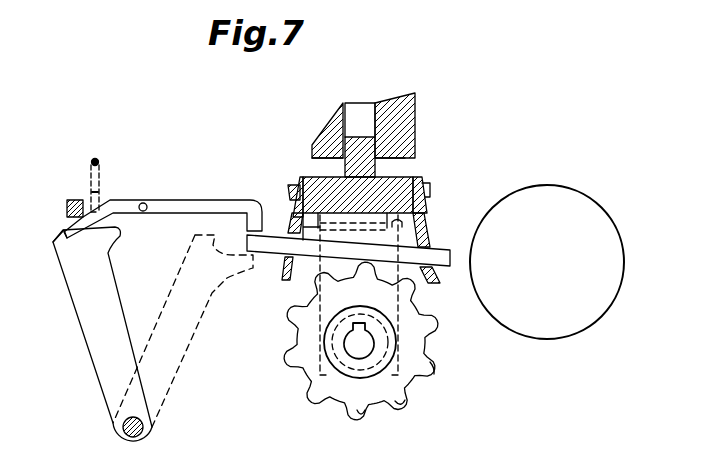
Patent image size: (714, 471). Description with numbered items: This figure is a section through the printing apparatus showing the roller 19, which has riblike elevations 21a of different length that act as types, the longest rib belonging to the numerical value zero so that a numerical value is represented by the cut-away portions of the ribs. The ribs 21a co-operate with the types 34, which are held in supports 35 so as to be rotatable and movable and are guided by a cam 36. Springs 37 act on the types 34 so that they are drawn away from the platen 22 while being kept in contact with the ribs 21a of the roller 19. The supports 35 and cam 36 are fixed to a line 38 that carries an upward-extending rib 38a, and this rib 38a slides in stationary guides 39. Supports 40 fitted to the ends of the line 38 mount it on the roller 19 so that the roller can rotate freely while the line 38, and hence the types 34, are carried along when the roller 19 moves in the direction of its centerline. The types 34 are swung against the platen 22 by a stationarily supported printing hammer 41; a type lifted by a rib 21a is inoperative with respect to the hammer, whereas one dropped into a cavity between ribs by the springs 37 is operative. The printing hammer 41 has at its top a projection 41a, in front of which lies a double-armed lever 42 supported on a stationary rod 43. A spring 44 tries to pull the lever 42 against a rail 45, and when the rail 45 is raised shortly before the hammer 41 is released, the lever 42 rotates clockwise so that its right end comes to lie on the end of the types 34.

The roller 19 is at (360, 388).
The riblike elevations 21a is at (430, 367).
The platen 22 is at (520, 205).
The types 34 is at (420, 270).
The supports 35 is at (428, 218).
The cam 36 is at (293, 207).
The springs 37 is at (315, 177).
The line 38 is at (405, 177).
The rib 38a is at (388, 150).
The stationary guides 39 is at (392, 118).
The supports 40 is at (337, 262).
The printing hammers 41 is at (88, 323).
The projection 41a is at (65, 236).
The double-armed lever 42 is at (195, 203).
The stationary rod 43 is at (145, 205).
The spring 44 is at (100, 192).
The rail 45 is at (72, 200).